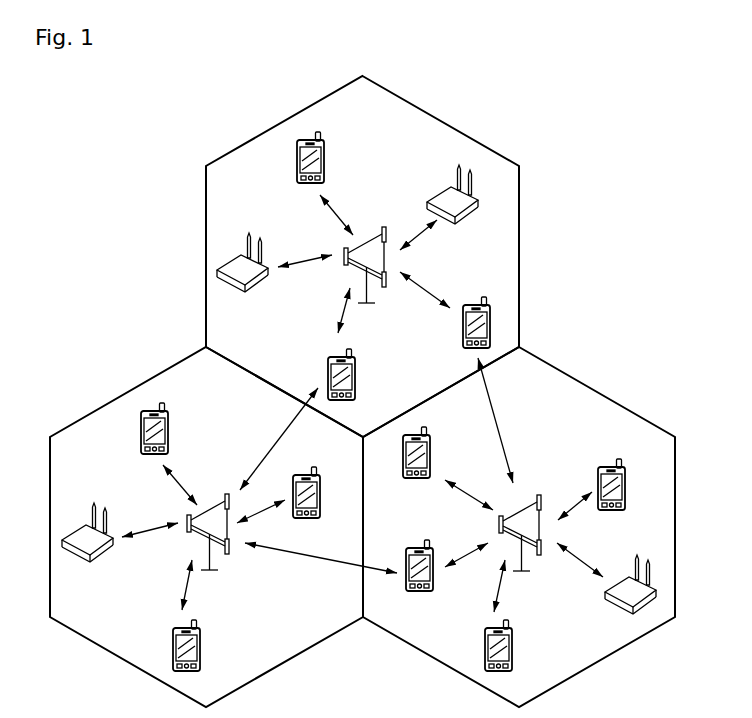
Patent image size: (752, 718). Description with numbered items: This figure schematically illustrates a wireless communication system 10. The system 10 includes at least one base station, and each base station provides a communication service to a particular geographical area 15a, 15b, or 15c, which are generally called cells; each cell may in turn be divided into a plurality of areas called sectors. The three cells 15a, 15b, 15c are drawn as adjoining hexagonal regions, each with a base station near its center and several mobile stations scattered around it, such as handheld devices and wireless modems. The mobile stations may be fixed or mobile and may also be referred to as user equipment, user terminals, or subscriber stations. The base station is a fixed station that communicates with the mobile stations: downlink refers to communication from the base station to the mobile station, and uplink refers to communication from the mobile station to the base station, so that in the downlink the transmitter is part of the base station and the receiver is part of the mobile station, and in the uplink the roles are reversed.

The wireless communication system 10 is at (362, 391).
The geographical area 15a is at (520, 246).
The geographical area 15b is at (615, 400).
The geographical area 15c is at (108, 403).